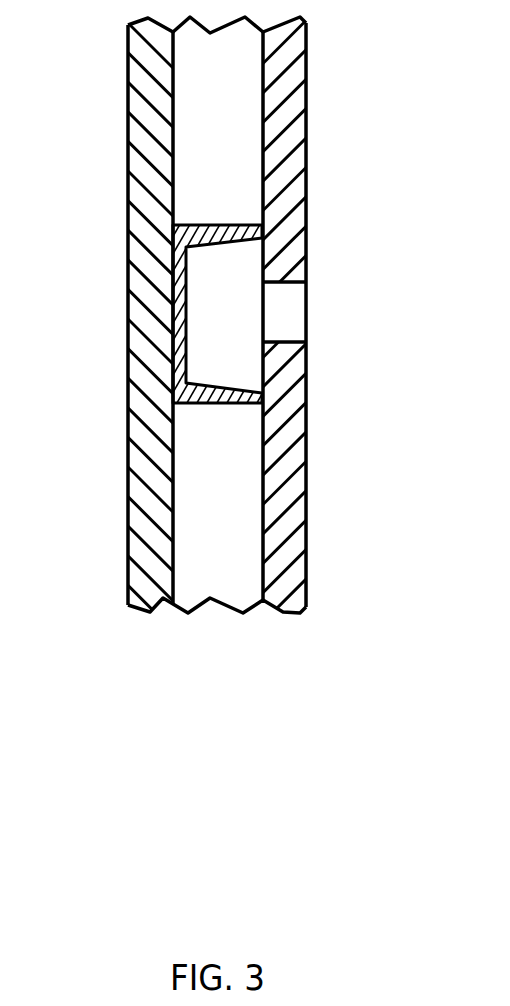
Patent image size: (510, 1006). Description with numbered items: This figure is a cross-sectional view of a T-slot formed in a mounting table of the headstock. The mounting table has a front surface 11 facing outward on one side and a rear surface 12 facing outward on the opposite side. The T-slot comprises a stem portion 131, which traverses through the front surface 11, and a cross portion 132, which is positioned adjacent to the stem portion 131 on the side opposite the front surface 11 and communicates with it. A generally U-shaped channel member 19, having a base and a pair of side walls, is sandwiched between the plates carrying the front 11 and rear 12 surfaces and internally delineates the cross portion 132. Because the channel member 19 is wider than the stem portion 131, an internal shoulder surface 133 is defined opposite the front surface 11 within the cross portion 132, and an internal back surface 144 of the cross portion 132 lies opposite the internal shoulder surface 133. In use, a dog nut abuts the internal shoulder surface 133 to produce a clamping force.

The front surface 11 is at (307, 76).
The rear surface 12 is at (128, 166).
The channel member 19 is at (207, 190).
The stem portion 131 is at (298, 305).
The cross portion 132 is at (240, 277).
The internal shoulder surface 133 is at (263, 362).
The internal back surface 144 is at (186, 298).